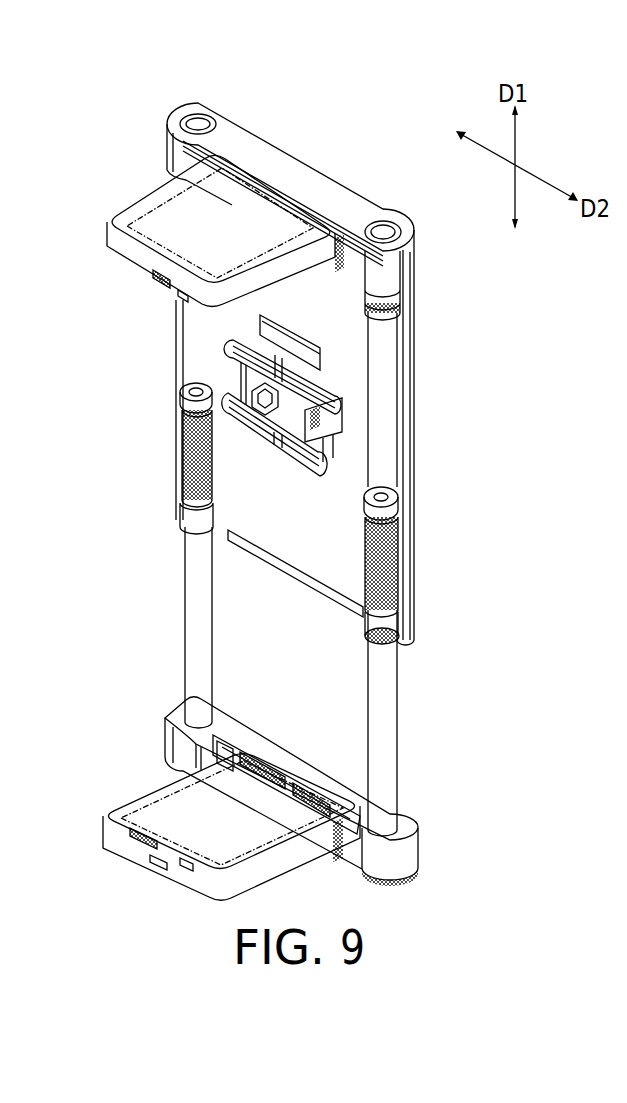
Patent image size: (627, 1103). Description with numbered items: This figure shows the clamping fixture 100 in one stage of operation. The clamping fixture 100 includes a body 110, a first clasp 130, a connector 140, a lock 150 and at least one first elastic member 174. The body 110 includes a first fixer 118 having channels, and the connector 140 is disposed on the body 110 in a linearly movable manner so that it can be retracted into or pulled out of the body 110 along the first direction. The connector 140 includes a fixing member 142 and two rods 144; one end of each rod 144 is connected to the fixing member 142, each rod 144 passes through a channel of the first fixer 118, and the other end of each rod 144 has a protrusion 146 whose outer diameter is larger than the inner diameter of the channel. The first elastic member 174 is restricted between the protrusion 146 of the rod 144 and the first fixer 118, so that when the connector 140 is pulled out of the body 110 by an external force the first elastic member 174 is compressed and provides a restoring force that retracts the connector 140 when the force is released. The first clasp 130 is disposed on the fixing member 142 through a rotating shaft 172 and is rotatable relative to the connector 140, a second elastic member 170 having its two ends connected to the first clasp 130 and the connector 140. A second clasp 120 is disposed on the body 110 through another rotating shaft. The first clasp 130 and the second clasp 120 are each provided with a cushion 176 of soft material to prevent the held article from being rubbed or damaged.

The clamping fixture 100 is at (287, 492).
The body 110 is at (412, 323).
The first fixer 118 is at (383, 624).
The second clasp 120 is at (147, 207).
The first clasp 130 is at (217, 828).
The connector 140 is at (328, 599).
The fixing member 142 is at (410, 853).
The rod 144 is at (192, 600).
The protrusion 146 is at (180, 404).
The lock 150 is at (358, 374).
The second elastic member 170 is at (340, 766).
The rotating shaft 172 is at (280, 783).
The first elastic member 174 is at (182, 450).
The cushion 176 is at (147, 812).